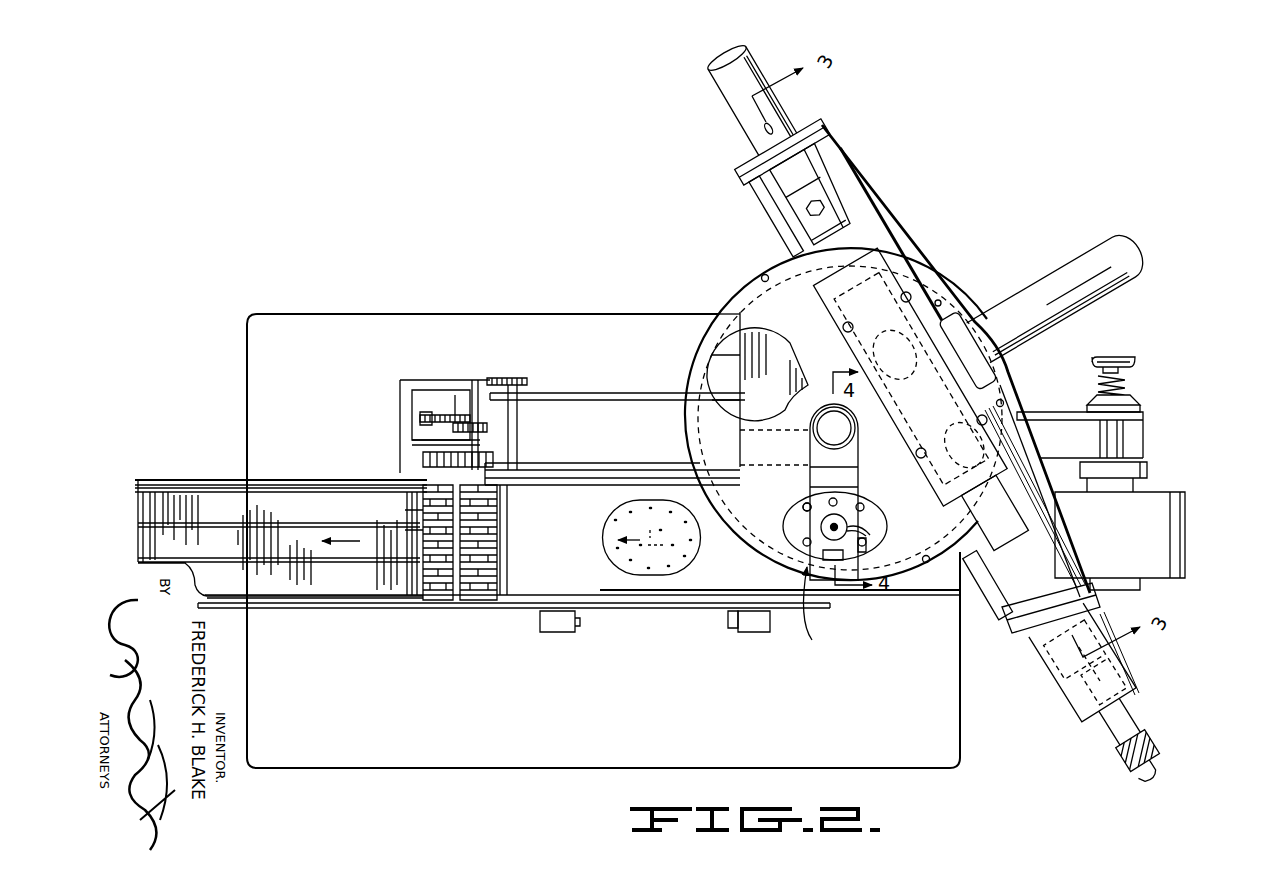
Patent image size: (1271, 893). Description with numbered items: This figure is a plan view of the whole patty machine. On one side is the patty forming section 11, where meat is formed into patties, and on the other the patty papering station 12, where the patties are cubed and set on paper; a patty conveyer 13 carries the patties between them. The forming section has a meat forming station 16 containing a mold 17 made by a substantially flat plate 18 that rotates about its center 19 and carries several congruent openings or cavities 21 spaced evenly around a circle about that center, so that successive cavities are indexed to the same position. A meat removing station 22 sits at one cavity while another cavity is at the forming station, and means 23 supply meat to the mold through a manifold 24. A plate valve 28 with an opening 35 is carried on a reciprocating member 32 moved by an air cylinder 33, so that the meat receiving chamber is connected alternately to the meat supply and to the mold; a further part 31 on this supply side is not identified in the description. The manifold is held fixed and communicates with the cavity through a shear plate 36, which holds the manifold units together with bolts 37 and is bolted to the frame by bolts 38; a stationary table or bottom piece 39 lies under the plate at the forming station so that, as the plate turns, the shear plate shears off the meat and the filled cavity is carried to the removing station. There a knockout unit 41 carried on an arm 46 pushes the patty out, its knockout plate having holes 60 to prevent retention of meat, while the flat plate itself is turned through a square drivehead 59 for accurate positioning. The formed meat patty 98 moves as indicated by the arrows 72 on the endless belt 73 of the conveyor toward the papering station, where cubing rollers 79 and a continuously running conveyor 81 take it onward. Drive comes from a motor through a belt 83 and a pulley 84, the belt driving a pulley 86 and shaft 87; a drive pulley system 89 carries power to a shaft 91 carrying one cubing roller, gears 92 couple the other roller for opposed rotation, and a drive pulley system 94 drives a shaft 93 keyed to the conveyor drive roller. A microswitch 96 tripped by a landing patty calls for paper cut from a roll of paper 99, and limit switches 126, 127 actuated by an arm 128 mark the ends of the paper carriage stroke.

The patty forming section 11 is at (966, 253).
The patty papering station 12 is at (392, 610).
The patty conveyer 13 is at (526, 580).
The meat forming station 16 is at (940, 328).
The mold 17 is at (940, 440).
The substantially flat plate 18 is at (733, 320).
The center 19 is at (838, 428).
The openings or cavities 21 is at (717, 368).
The meat removing station 22 is at (819, 606).
The means for supplying meat 23 is at (945, 228).
The manifold 24 is at (1092, 257).
The plate valve 28 is at (848, 250).
The nozzle 31 is at (1130, 686).
The reciprocating member 32 is at (830, 188).
The air cylinder 33 is at (727, 97).
The openings 35 is at (972, 345).
The shear plate 36 is at (812, 328).
The bolts 37 is at (878, 295).
The bolts 38 is at (764, 275).
The table or bottom piece 39 is at (752, 212).
The knockout unit 41 is at (782, 521).
The arm 46 is at (817, 476).
The square drivehead 59 is at (790, 442).
The holes 60 is at (806, 541).
The arrows 72 is at (648, 533).
The endless belt 73 is at (602, 581).
The cubing rollers 79 is at (468, 558).
The conveyor 81 is at (266, 505).
The belt 83 is at (428, 412).
The pulley 84 is at (412, 418).
The pulley 86 is at (455, 415).
The shaft 87 is at (460, 440).
The drive pulley system 89 is at (490, 428).
The shaft 91 is at (475, 400).
The gears 92 is at (420, 458).
The shaft 93 is at (518, 452).
The drive pulley system 94 is at (515, 380).
The microswitch 96 is at (413, 538).
The formed meat patty 98 is at (604, 524).
The roll of paper 99 is at (1185, 525).
The limit switch 126 is at (555, 632).
The limit switch 127 is at (760, 632).
The arm 128 is at (730, 624).